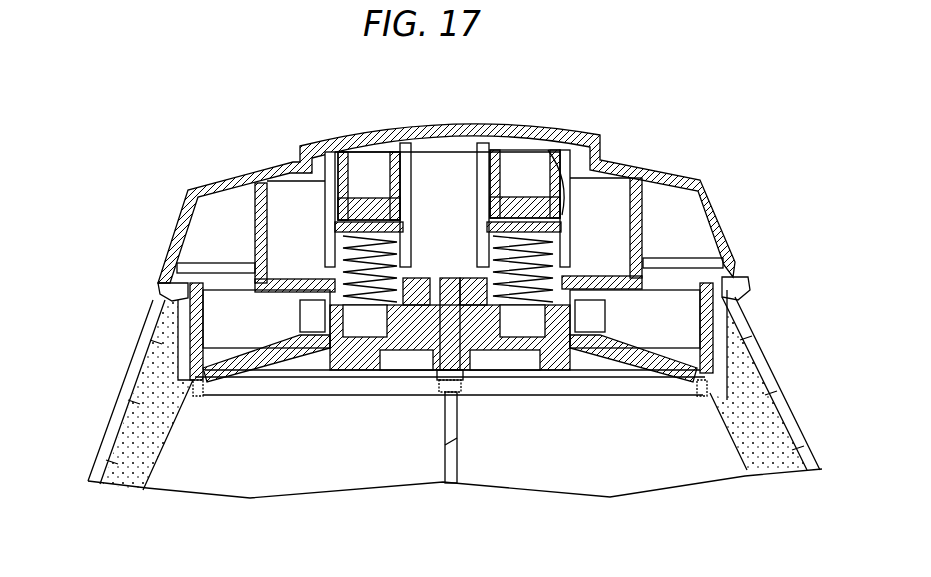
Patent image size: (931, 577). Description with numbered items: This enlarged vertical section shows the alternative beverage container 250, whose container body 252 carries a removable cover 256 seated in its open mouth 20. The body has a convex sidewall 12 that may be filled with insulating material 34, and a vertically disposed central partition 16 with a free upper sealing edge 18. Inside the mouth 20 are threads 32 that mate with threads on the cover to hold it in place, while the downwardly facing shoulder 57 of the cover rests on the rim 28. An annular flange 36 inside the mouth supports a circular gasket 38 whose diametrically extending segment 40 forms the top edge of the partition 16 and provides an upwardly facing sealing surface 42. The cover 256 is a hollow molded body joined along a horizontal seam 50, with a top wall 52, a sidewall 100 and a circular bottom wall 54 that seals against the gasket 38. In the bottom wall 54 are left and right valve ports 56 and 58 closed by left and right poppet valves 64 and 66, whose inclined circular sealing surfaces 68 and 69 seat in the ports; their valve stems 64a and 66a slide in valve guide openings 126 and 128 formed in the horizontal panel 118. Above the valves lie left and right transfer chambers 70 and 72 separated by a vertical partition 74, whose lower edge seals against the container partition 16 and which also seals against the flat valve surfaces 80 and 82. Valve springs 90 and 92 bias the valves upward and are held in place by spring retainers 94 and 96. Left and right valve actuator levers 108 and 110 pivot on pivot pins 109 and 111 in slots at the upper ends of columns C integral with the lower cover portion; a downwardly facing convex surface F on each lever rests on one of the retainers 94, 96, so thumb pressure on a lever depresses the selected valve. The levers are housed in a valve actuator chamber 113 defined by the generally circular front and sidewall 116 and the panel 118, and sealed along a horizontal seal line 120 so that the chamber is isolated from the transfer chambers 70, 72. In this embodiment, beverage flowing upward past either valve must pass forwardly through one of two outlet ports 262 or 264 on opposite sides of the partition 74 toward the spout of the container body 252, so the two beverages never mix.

The convex sidewall 12 is at (108, 437).
The central partition 16 is at (458, 462).
The free upper sealing edge 18 is at (392, 93).
The open mouth 20 is at (192, 298).
The rim 28 is at (158, 281).
The threads 32 is at (178, 355).
The insulating material 34 is at (133, 460).
The annular flange 36 is at (198, 397).
The circular gasket 38 is at (583, 396).
The diametrically extending segment 40 is at (440, 382).
The upwardly facing sealing surface 42 is at (462, 371).
The horizontal seam 50 is at (213, 263).
The top wall 52 is at (568, 150).
The circular bottom wall 54 is at (680, 362).
The left valve port 56 is at (242, 372).
The downwardly facing shoulder 57 is at (160, 288).
The right valve port 58 is at (657, 363).
The left poppet valve 64 is at (295, 357).
The valve stem 64a is at (313, 350).
The right poppet valve 66 is at (548, 330).
The valve stem 66a is at (530, 330).
The inclined circular sealing surface 68 is at (273, 358).
The inclined circular sealing surface 69 is at (703, 340).
The left transfer chamber 70 is at (246, 309).
The right transfer chamber 72 is at (621, 314).
The vertical partition 74 is at (420, 290).
The flat valve surface 80 is at (373, 320).
The flat valve surface 82 is at (450, 300).
The valve spring 90 is at (347, 251).
The valve spring 92 is at (552, 246).
The spring retainer 94 is at (338, 227).
The spring retainer 96 is at (560, 205).
The sidewall 100 is at (180, 220).
The left valve actuator lever 108 is at (343, 158).
The pivot pin 109 is at (313, 172).
The right valve actuator lever 110 is at (522, 195).
The pivot pin 111 is at (440, 155).
The valve actuator chamber 113 is at (625, 205).
The front and sidewall 116 is at (240, 177).
The horizontal panel 118 is at (617, 282).
The horizontal seal line 120 is at (620, 262).
The valve guide opening 126 is at (318, 322).
The valve guide opening 128 is at (582, 320).
The container 250 is at (73, 463).
The container body 252 is at (778, 366).
The cover 256 is at (248, 154).
The outlet port 262 is at (318, 327).
The outlet port 264 is at (555, 343).
The column C is at (330, 193).
The downwardly facing convex surface F is at (520, 201).